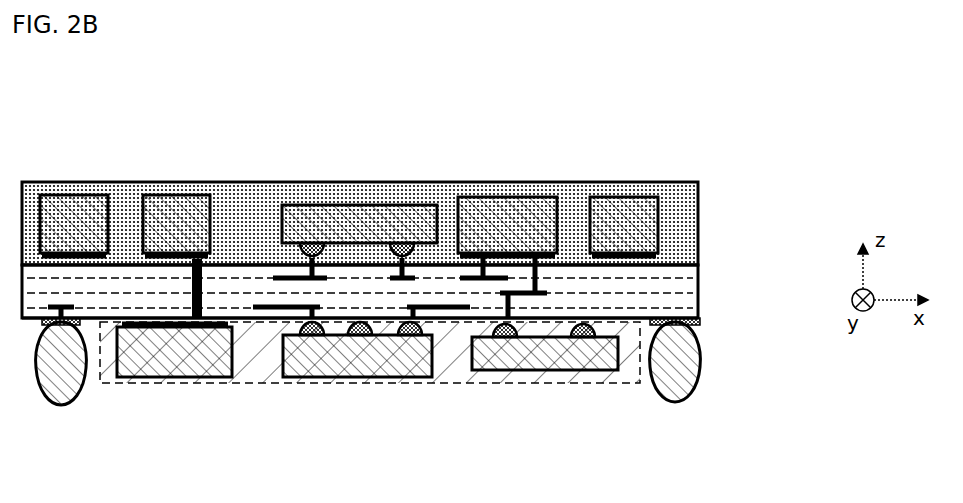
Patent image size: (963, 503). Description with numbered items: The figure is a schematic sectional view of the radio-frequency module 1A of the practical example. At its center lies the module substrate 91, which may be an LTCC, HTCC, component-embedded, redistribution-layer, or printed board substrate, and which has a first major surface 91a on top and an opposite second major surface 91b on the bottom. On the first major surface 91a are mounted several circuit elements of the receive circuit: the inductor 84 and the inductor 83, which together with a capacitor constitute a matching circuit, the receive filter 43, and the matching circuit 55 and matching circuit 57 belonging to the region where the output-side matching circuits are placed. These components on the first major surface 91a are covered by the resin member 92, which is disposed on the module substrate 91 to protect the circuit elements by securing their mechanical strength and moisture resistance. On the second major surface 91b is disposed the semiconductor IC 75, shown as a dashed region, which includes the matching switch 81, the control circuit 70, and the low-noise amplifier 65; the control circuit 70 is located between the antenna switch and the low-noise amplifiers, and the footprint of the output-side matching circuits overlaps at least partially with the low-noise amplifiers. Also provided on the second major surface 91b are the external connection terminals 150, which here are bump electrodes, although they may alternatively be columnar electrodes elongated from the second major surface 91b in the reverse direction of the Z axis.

The radio-frequency module 1A is at (826, 146).
The inductor 84 is at (70, 203).
The inductor 83 is at (193, 203).
The receive filter 43 is at (365, 212).
The matching circuit 55 is at (512, 212).
The matching circuit 57 is at (621, 212).
The resin member 92 is at (683, 217).
The major surface 91a is at (684, 260).
The module substrate 91 is at (688, 280).
The major surface 91b is at (700, 323).
The external connection terminals 150 is at (60, 387).
The matching switch 81 is at (188, 365).
The control circuit 70 is at (362, 365).
The semiconductor IC 75 is at (458, 360).
The low-noise amplifier 65 is at (550, 365).